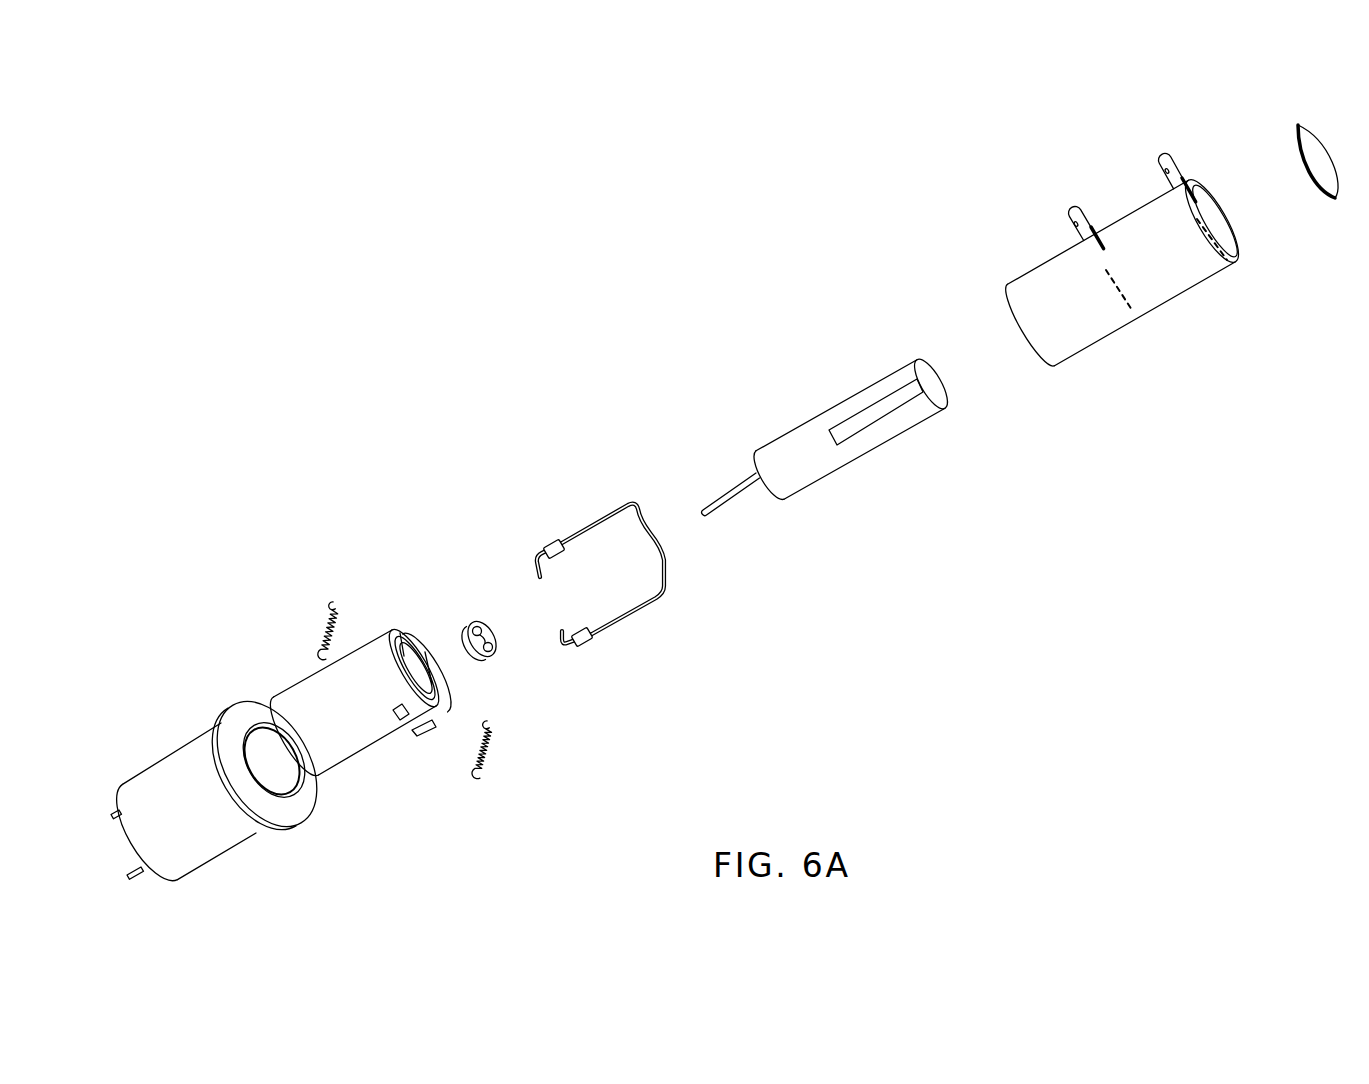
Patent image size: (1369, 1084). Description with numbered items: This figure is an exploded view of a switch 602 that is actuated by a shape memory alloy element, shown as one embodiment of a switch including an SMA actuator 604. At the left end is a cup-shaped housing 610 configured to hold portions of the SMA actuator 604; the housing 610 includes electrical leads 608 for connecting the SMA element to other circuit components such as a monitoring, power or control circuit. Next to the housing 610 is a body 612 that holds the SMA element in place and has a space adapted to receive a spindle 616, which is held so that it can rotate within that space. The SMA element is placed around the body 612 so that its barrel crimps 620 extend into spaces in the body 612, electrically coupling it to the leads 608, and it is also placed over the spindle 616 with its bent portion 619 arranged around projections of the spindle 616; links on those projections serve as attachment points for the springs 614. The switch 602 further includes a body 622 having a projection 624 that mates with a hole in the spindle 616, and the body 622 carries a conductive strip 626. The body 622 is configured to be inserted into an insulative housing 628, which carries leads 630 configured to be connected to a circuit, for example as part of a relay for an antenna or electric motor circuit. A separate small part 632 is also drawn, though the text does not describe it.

The switch 602 is at (813, 717).
The SMA actuator 604 is at (232, 612).
The electrical leads 608 is at (107, 812).
The housing 610 is at (216, 876).
The body 612 is at (400, 766).
The springs 614 is at (318, 610).
The spindle 616 is at (505, 661).
The bent portion 619 is at (650, 522).
The barrel crimps 620 is at (595, 655).
The body 622 is at (825, 490).
The projection 624 is at (736, 516).
The conductive strip 626 is at (853, 408).
The insulative housing 628 is at (1090, 373).
The leads 630 is at (1060, 208).
The cap piece 632 is at (1288, 140).